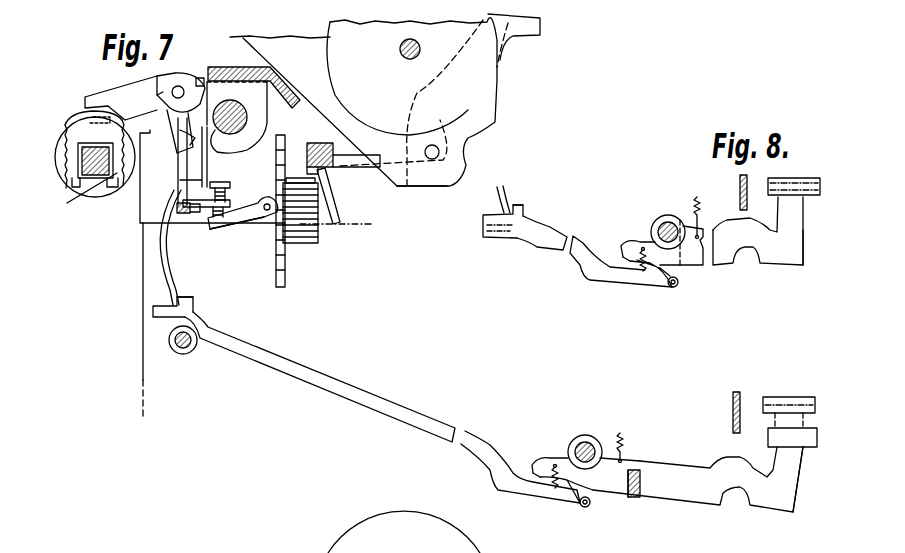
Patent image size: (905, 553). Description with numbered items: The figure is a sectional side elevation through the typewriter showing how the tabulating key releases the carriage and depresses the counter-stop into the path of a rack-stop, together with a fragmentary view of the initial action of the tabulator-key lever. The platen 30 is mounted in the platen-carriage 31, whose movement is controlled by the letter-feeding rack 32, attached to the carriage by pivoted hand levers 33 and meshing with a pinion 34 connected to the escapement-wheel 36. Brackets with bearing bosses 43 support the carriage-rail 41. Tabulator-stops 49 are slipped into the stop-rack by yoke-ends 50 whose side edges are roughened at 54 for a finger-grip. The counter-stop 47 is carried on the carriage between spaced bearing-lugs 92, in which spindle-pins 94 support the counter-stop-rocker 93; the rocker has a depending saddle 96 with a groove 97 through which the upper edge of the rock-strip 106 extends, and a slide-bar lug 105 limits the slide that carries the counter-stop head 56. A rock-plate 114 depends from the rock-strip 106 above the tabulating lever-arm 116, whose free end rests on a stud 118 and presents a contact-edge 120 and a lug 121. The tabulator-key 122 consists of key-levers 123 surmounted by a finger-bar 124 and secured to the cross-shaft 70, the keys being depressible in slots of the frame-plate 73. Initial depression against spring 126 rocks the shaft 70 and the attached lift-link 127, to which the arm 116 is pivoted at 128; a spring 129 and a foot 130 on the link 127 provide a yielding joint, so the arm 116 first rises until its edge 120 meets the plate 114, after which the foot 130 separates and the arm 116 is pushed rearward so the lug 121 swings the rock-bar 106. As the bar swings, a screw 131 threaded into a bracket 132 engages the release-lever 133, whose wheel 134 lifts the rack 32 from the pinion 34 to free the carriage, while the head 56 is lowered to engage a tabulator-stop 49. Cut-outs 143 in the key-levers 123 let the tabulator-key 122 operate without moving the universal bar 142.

In FIG. 7, the platen 30 is at (433, 100).
In FIG. 7, the platen-carriage 31 is at (247, 55).
In FIG. 7, the letter-feeding rack 32 is at (323, 146).
In FIG. 7, the pivoted hand levers 33 is at (403, 190).
In FIG. 7, the pinion 34 is at (312, 247).
In FIG. 7, the escapement-wheel 36 is at (273, 267).
In FIG. 7, the carriage-rail 41 is at (253, 133).
In FIG. 7, the bearing bosses 43 is at (93, 200).
In FIG. 7, the counter-stop 47 is at (103, 93).
In FIG. 7, the tabulator-stops 49 is at (73, 115).
In FIG. 7, the yoke-ends 50 is at (75, 182).
In FIG. 7, the roughened side edges 54 is at (60, 150).
In FIG. 7, the counter-stop head 56 is at (100, 122).
In FIG. 7, the cross-shaft 70 is at (585, 440).
In FIG. 8, the cross-shaft 70 is at (670, 225).
In FIG. 7, the frame-plate 73 is at (735, 424).
In FIG. 8, the frame-plate 73 is at (738, 193).
In FIG. 7, the bearing-lugs 92 is at (221, 90).
In FIG. 7, the counter-stop-rocker 93 is at (160, 77).
In FIG. 7, the spindle-pins 94 is at (173, 95).
In FIG. 7, the saddle 96 is at (200, 157).
In FIG. 7, the groove 97 is at (187, 137).
In FIG. 7, the slide-bar lug 105 is at (201, 76).
In FIG. 7, the rock-strip 106 is at (178, 163).
In FIG. 7, the rock-plate 114 is at (170, 274).
In FIG. 8, the rock-plate 114 is at (505, 198).
In FIG. 7, the tabulating lever-arm 116 is at (424, 413).
In FIG. 8, the tabulating lever-arm 116 is at (548, 227).
In FIG. 7, the stud 118 is at (183, 355).
In FIG. 7, the contact-edge 120 is at (157, 305).
In FIG. 8, the contact-edge 120 is at (488, 215).
In FIG. 7, the lug 121 is at (187, 300).
In FIG. 8, the lug 121 is at (522, 205).
In FIG. 7, the tabulator-key 122 is at (784, 518).
In FIG. 8, the tabulator-key 122 is at (794, 270).
In FIG. 7, the key-levers 123 is at (687, 466).
In FIG. 8, the key-levers 123 is at (757, 258).
In FIG. 7, the finger-bar 124 is at (807, 448).
In FIG. 8, the finger-bar 124 is at (810, 198).
In FIG. 7, the spring 126 is at (621, 433).
In FIG. 8, the spring 126 is at (700, 187).
In FIG. 7, the lift-link 127 is at (550, 457).
In FIG. 8, the lift-link 127 is at (662, 246).
In FIG. 7, the pivot 128 is at (588, 508).
In FIG. 8, the pivot 128 is at (676, 286).
In FIG. 7, the spring 129 is at (554, 490).
In FIG. 8, the spring 129 is at (647, 274).
In FIG. 7, the foot 130 is at (540, 467).
In FIG. 8, the foot 130 is at (623, 255).
In FIG. 7, the screw 131 is at (229, 182).
In FIG. 7, the bracket 132 is at (246, 199).
In FIG. 7, the release-lever 133 is at (243, 220).
In FIG. 7, the wheel 134 is at (335, 213).
In FIG. 7, the universal bar 142 is at (639, 499).
In FIG. 7, the cut-outs 143 is at (641, 482).